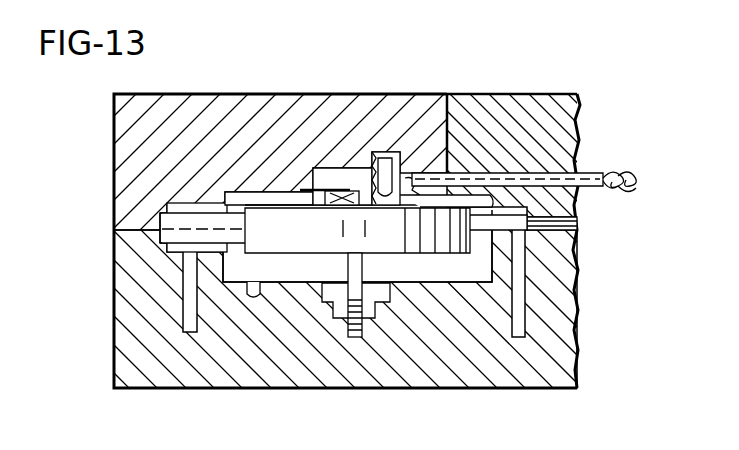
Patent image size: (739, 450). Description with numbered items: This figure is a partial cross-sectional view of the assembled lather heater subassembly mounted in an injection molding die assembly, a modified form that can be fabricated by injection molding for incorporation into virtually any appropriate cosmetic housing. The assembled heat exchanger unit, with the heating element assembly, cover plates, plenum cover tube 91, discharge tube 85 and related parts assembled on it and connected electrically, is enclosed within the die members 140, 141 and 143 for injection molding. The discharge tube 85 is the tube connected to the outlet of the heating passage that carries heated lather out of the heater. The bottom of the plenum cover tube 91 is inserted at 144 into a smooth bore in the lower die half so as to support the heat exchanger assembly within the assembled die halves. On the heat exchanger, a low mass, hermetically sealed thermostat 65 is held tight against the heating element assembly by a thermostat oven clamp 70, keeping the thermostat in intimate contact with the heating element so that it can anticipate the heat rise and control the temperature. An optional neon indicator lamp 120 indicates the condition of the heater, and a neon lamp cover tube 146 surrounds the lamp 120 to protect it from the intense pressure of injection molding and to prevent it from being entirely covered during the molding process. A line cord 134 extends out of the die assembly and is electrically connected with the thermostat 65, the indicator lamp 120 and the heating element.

The upper die member 140 is at (114, 128).
The die member 141 is at (537, 112).
The lower mold block 143 is at (128, 334).
The discharge tube 85 is at (165, 233).
The thermostat 65 is at (312, 190).
The thermostat oven clamp 70 is at (352, 191).
The neon lamp cover tube 146 is at (380, 160).
The neon indicator lamp 120 is at (397, 160).
The line cord 134 is at (592, 172).
The plenum cover tube 91 is at (345, 298).
The insertion point of plenum cover tube 144 is at (353, 337).